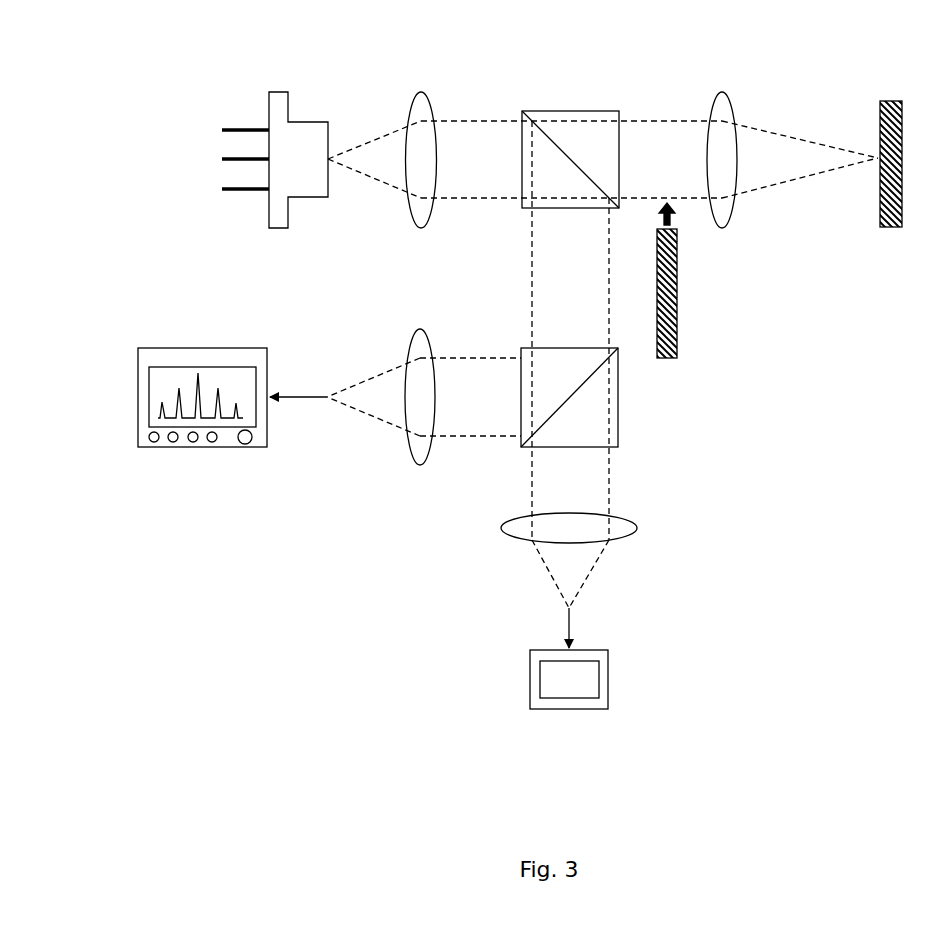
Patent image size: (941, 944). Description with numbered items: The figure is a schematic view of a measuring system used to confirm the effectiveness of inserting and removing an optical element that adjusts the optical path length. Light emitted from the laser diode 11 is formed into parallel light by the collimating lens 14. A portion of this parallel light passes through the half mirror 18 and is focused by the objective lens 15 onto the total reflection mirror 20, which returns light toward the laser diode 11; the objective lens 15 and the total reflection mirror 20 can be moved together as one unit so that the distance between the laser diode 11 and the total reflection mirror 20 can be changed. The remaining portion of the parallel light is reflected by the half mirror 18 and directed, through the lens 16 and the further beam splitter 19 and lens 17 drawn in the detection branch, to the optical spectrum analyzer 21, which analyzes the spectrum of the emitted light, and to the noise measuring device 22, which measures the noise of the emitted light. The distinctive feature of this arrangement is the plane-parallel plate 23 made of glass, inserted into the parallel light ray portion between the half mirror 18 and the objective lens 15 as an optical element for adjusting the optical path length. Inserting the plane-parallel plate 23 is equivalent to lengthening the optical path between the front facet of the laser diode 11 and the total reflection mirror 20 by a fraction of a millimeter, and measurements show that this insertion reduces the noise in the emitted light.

The laser diode 11 is at (280, 92).
The collimating lens 14 is at (433, 92).
The objective lens 15 is at (726, 92).
The lens 16 is at (415, 470).
The lens 17 is at (637, 530).
The half mirror 18 is at (540, 108).
The beam splitter 19 is at (619, 382).
The total reflection mirror 20 is at (892, 100).
The optical spectrum analyzer 21 is at (196, 453).
The noise measuring device 22 is at (608, 675).
The plane-parallel plate 23 is at (677, 295).